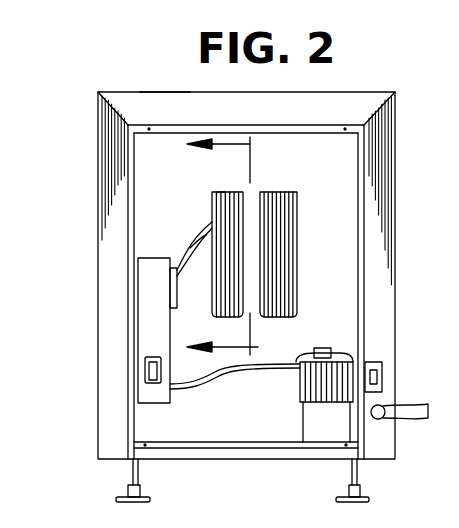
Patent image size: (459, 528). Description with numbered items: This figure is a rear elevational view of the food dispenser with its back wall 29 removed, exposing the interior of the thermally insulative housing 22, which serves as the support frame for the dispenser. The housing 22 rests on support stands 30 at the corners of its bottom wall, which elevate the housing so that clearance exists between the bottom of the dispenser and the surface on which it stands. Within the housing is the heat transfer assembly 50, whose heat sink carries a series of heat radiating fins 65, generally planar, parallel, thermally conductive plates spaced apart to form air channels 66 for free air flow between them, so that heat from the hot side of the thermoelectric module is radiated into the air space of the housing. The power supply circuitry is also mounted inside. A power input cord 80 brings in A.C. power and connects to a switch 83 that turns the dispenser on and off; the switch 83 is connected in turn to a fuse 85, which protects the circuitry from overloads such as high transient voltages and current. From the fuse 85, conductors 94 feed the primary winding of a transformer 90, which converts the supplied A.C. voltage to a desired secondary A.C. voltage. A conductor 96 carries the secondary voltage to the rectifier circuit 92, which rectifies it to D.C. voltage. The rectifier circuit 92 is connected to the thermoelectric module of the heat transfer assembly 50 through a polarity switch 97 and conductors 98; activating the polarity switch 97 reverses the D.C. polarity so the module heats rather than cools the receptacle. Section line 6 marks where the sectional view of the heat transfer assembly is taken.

The thermally insulative housing 22 is at (98, 285).
The back wall 29 is at (160, 102).
The support stand 30 is at (138, 472).
The heat transfer assembly 50 is at (297, 265).
The heat radiating fins 65 is at (236, 186).
The air channels 66 is at (219, 192).
The rectifier circuit 92 is at (168, 258).
The polarity switch 97 is at (145, 371).
The conductors 98 is at (206, 232).
The conductor 96 is at (178, 389).
The transformer 90 is at (300, 392).
The conductors 94 is at (300, 357).
The fuse 85 is at (321, 348).
The switch 83 is at (382, 373).
The power input cord 80 is at (409, 410).
The section line 6- 6 is at (213, 248).